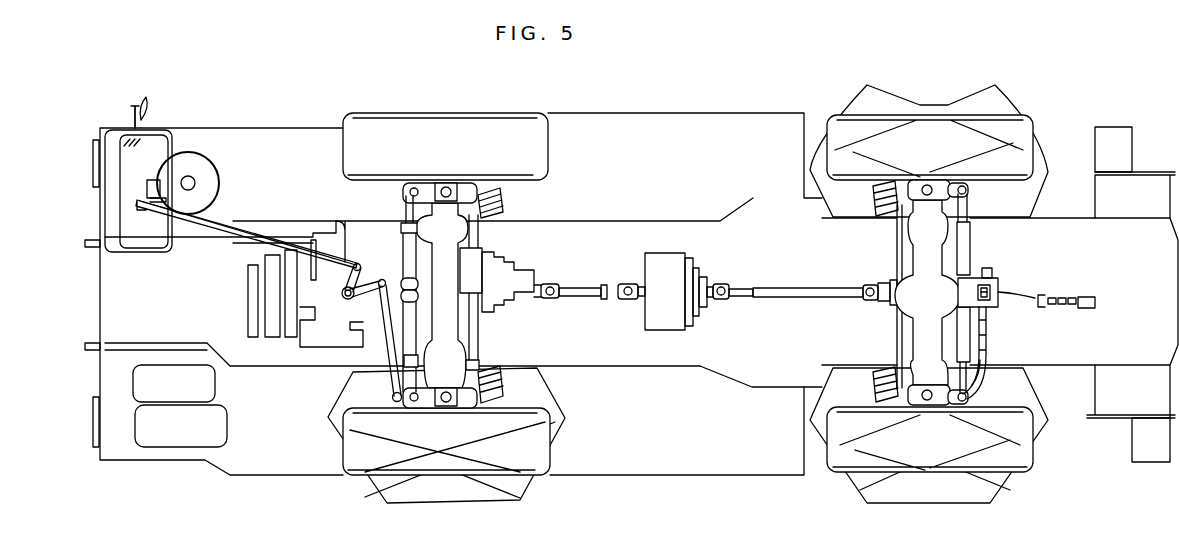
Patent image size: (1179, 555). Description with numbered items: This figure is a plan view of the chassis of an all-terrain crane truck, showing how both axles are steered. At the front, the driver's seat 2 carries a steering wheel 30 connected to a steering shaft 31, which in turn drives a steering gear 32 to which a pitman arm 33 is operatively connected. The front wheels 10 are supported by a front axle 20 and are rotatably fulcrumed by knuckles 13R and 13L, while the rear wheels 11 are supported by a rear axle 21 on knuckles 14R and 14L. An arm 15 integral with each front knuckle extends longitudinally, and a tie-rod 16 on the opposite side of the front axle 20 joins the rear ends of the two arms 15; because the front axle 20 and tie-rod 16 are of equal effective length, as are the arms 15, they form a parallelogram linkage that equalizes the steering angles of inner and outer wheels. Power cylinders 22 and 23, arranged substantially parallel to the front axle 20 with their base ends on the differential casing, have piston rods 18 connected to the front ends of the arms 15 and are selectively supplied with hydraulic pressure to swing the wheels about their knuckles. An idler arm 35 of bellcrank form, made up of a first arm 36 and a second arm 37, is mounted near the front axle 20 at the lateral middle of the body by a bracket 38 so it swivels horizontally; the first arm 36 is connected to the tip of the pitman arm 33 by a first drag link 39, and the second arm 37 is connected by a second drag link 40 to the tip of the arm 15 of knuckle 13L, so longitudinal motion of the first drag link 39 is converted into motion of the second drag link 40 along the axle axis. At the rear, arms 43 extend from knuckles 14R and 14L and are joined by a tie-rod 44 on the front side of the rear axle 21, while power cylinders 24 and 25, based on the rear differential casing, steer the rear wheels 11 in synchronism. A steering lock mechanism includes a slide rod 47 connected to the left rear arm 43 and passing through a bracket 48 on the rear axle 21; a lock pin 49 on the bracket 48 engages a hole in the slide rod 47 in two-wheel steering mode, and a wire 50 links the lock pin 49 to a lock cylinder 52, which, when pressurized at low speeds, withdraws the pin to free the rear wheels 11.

The driver's seat 2 is at (157, 128).
The front wheels 10 is at (474, 113).
The rear wheels 11 is at (1007, 115).
The right front knuckle 13R is at (460, 183).
The left front knuckle 13L is at (452, 403).
The right rear knuckle 14R is at (918, 182).
The left rear knuckle 14L is at (920, 405).
The arm 15 is at (424, 181).
The tie-rod 16 is at (483, 343).
The piston rods 18 is at (410, 186).
The front axle 20 is at (450, 247).
The rear axle 21 is at (935, 258).
The power cylinder 22 is at (404, 247).
The power cylinder 23 is at (420, 343).
The power cylinder 24 is at (967, 242).
The power cylinder 25 is at (965, 345).
The steering wheel 30 is at (220, 172).
The steering shaft 31 is at (188, 176).
The steering gear 32 is at (145, 193).
The pitman arm 33 is at (138, 205).
The idler arm 35 is at (323, 296).
The first arm 36 is at (344, 250).
The second arm 37 is at (372, 282).
The bracket 38 is at (347, 295).
The first drag link 39 is at (242, 230).
The second drag link 40 is at (383, 323).
The arms 43 is at (955, 181).
The tie-rod 44 is at (897, 243).
The slide rod 47 is at (990, 317).
The bracket 48 is at (1003, 283).
The lock pin 49 is at (993, 297).
The wire 50 is at (1035, 300).
The lock cylinder 52 is at (1094, 307).